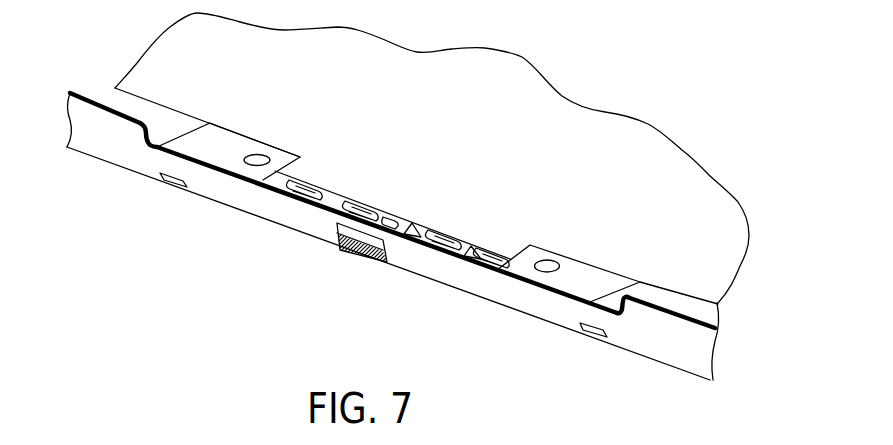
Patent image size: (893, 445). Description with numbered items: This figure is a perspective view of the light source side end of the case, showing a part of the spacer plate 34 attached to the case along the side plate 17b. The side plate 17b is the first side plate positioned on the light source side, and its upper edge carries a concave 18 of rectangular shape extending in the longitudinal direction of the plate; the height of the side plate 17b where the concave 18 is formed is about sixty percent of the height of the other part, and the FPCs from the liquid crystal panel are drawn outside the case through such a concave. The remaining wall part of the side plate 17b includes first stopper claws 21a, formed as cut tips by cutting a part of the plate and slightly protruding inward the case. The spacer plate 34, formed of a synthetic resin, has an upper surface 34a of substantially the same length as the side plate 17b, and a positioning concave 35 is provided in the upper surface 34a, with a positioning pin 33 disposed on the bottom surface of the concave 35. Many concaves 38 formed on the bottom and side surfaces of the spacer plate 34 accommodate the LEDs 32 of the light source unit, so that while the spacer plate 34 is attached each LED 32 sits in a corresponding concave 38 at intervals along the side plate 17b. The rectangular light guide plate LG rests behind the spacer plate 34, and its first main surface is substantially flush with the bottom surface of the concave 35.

The side plate 17b is at (654, 340).
The concave 18 is at (160, 142).
The first stopper claw 21a is at (166, 186).
The LED 32 is at (305, 188).
The positioning pin 33 is at (388, 220).
The spacer plate 34 is at (597, 273).
The upper surface 34a is at (213, 138).
The positioning concave 35 is at (522, 245).
The concave 38 is at (287, 186).
The light guide plate LG is at (597, 118).